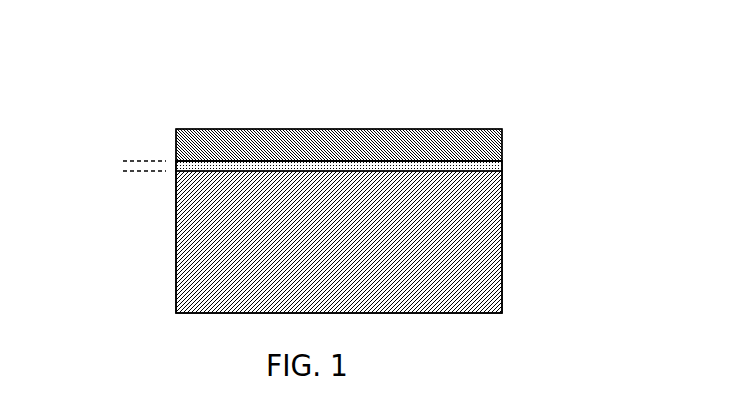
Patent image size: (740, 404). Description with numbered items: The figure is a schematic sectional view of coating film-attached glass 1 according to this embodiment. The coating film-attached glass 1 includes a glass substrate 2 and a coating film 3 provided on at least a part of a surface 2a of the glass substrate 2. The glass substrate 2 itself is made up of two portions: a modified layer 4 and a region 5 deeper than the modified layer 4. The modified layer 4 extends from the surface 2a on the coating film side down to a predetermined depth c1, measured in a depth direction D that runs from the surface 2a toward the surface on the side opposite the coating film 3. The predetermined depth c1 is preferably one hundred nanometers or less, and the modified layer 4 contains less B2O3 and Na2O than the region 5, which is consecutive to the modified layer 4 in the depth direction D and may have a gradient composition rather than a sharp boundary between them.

The coating film-attached glass 1 is at (510, 79).
The glass substrate 2 is at (591, 194).
The surface of the glass substrate 2a is at (415, 152).
The coating film 3 is at (494, 127).
The modified layer 4 is at (494, 162).
The region deeper than the modified layer 5 is at (494, 228).
The predetermined depth c1 is at (145, 162).
The depth direction D is at (73, 155).